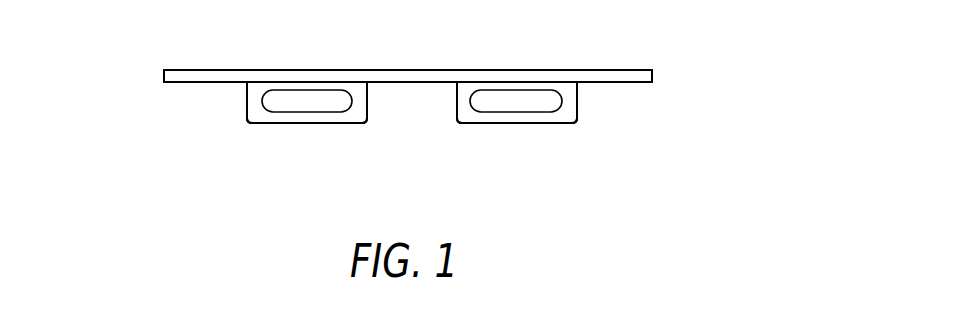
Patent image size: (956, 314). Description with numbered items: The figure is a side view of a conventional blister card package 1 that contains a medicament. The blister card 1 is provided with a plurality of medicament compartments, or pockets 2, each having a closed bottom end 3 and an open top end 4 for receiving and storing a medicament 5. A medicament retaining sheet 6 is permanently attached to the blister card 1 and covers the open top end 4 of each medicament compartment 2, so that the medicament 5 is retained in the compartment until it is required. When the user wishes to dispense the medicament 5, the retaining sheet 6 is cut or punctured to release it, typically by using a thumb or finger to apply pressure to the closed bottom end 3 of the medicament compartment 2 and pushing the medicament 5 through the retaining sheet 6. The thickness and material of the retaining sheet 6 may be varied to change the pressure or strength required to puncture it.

The blister card package 1 is at (187, 99).
The medicament compartment 2 is at (247, 113).
The closed bottom end 3 is at (317, 123).
The open top end 4 is at (368, 90).
The medicament 5 is at (288, 102).
The medicament retaining sheet 6 is at (627, 78).